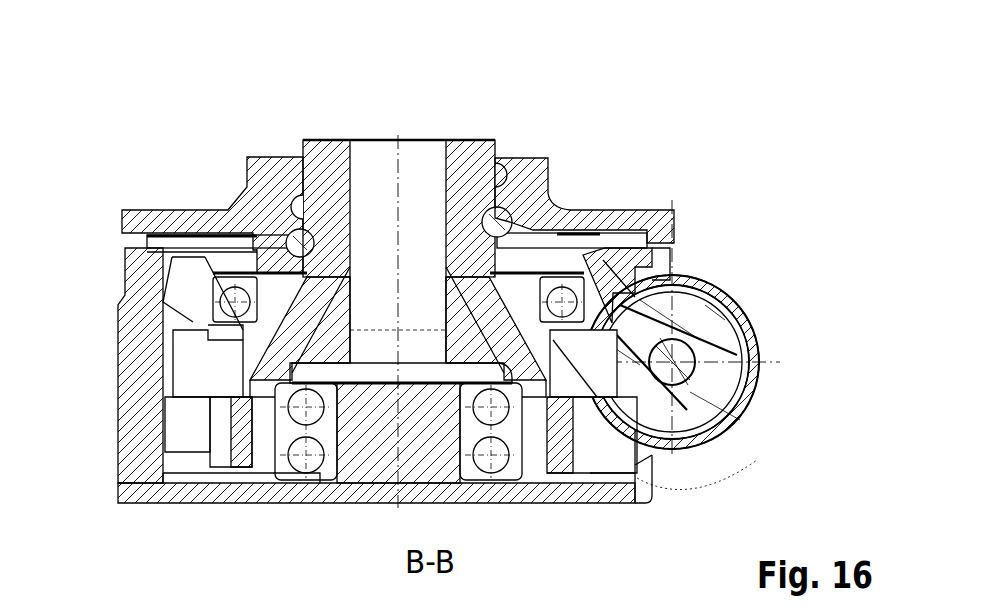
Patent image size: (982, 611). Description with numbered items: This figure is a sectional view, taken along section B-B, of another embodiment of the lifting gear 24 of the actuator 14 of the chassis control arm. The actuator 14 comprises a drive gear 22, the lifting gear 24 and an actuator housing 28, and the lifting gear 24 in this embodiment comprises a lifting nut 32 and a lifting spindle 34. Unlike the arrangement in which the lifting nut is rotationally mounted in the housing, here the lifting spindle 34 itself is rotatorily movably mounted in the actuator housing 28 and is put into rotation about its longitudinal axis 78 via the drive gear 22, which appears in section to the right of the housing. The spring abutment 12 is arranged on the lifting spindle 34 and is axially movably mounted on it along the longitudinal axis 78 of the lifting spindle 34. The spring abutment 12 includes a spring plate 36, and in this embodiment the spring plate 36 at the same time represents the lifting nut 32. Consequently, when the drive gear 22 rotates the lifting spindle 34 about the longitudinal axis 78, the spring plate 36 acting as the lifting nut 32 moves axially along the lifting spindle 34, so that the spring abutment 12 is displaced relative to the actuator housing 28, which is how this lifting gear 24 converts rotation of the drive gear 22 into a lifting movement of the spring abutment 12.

The actuator 14 is at (398, 276).
The actuator housing 28 is at (133, 385).
The lifting gear 24 is at (262, 126).
The lifting spindle 34 is at (460, 157).
The lifting nut 32 is at (584, 146).
The spring plate 36 is at (527, 180).
The longitudinal axis 78 is at (385, 450).
The spring abutment 12 is at (663, 288).
The drive gear 22 is at (702, 325).